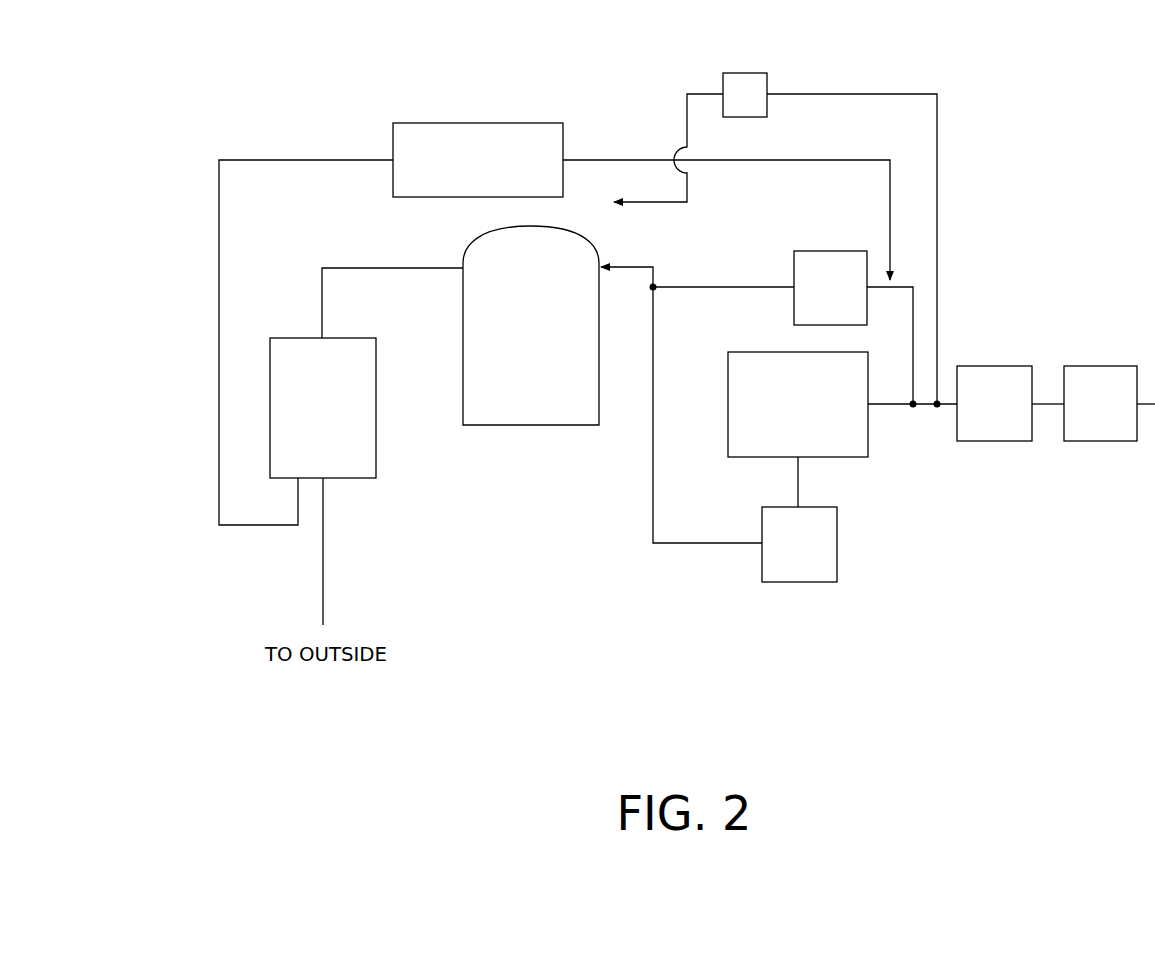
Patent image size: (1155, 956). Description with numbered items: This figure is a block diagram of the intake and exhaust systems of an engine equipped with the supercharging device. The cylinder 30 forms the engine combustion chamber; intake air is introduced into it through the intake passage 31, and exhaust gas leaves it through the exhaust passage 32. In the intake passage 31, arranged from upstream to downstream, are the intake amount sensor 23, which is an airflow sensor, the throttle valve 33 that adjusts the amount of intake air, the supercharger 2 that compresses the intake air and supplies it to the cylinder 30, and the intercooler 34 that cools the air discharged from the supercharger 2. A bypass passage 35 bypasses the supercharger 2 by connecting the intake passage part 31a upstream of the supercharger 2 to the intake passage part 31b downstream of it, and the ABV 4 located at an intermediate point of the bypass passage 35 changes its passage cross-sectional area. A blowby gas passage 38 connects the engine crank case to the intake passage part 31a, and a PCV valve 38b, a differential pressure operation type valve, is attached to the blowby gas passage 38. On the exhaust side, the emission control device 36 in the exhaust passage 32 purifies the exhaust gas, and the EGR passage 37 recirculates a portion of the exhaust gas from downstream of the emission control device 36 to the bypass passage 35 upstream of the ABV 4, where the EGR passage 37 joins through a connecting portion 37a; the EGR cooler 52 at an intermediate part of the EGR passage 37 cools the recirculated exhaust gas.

The supercharger 2 is at (728, 372).
The ABV 4 is at (826, 251).
The intake amount sensor 23 is at (1100, 441).
The cylinder 30 is at (527, 427).
The intake passage 31 is at (674, 548).
The intake passage part 31a is at (888, 404).
The intake passage part 31b is at (652, 452).
The exhaust passage 32 is at (343, 268).
The throttle valve 33 is at (997, 366).
The intercooler 34 is at (837, 542).
The bypass passage 35 is at (727, 287).
The emission control device 36 is at (376, 412).
The EGR passage 37 is at (650, 160).
The branch pipe 37a is at (895, 283).
The blowby gas passage 38 is at (940, 143).
The positive crankcase ventilation (PCV) valve 38b is at (753, 73).
The EGR cooler 52 is at (479, 123).